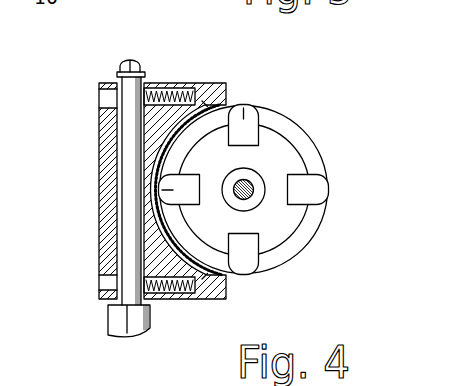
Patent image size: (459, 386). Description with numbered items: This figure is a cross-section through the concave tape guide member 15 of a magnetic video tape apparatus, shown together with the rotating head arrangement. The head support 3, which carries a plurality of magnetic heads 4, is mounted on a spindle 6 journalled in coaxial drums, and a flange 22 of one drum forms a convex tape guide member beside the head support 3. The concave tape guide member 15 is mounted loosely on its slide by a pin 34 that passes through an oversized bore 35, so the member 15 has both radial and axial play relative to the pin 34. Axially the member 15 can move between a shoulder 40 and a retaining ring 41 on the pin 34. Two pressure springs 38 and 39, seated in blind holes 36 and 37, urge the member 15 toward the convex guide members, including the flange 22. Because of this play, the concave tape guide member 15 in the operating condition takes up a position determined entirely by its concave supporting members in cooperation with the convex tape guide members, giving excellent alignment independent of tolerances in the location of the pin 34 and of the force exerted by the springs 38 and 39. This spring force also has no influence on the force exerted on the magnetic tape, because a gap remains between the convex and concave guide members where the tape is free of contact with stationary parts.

The head support 3 is at (262, 205).
The magnetic heads 4 is at (313, 194).
The spindle 6 is at (248, 195).
The concave tape guide member 15 is at (110, 128).
The flange 22 is at (284, 131).
The pin 34 is at (86, 191).
The oversized bore 35 is at (118, 163).
The blind hole 36 is at (106, 98).
The blind hole 37 is at (106, 283).
The pressure spring 38 is at (171, 98).
The pressure spring 39 is at (167, 288).
The shoulder 40 is at (120, 318).
The retaining ring 41 is at (116, 74).